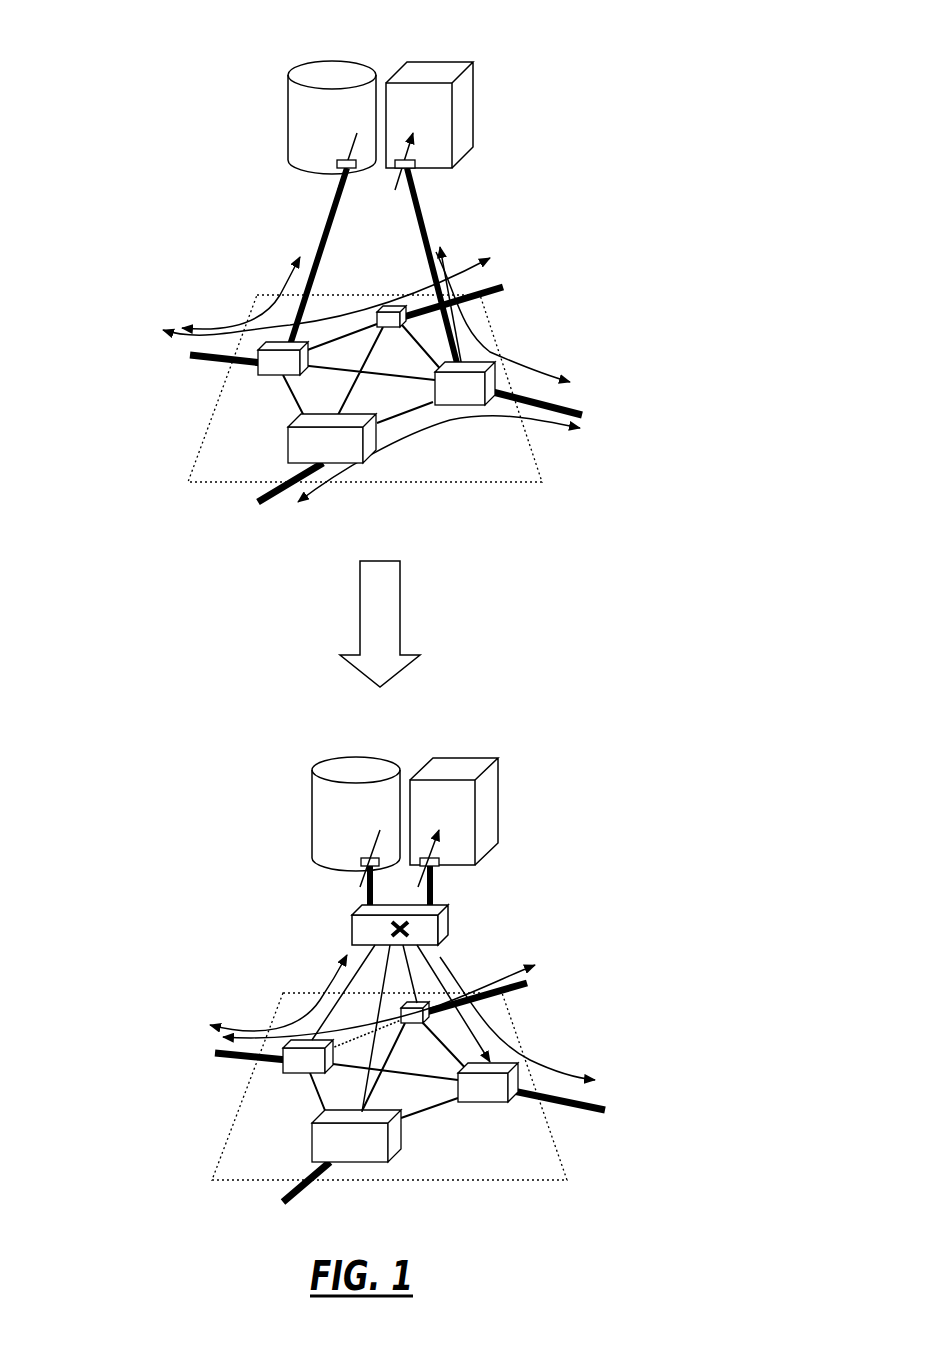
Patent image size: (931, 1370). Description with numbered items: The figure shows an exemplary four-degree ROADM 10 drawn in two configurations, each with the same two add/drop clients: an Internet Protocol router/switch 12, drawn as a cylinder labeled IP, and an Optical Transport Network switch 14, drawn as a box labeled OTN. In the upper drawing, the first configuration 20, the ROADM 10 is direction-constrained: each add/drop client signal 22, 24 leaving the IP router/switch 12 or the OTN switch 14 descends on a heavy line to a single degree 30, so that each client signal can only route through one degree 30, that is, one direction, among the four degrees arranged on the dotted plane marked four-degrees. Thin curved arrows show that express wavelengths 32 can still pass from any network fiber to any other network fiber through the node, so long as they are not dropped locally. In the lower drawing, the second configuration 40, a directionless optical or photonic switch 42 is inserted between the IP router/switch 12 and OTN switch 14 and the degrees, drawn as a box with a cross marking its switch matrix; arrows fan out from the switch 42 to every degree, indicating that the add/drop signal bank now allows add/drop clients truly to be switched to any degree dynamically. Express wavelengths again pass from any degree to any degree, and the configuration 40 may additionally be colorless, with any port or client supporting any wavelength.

The 4-degree ROADM 10 is at (695, 62).
The Internet Protocol (IP) router/switch 12 is at (332, 62).
The Optical Transport Network (OTN) switch 14 is at (432, 60).
The first configuration 20 is at (193, 133).
The add/drop client signal 22 is at (253, 318).
The add/drop client signal 24 is at (518, 362).
The degree 30 is at (470, 400).
The express wavelengths 32 is at (487, 262).
The second configuration 40 is at (200, 892).
The directionless optical or photonic switch 42 is at (442, 917).